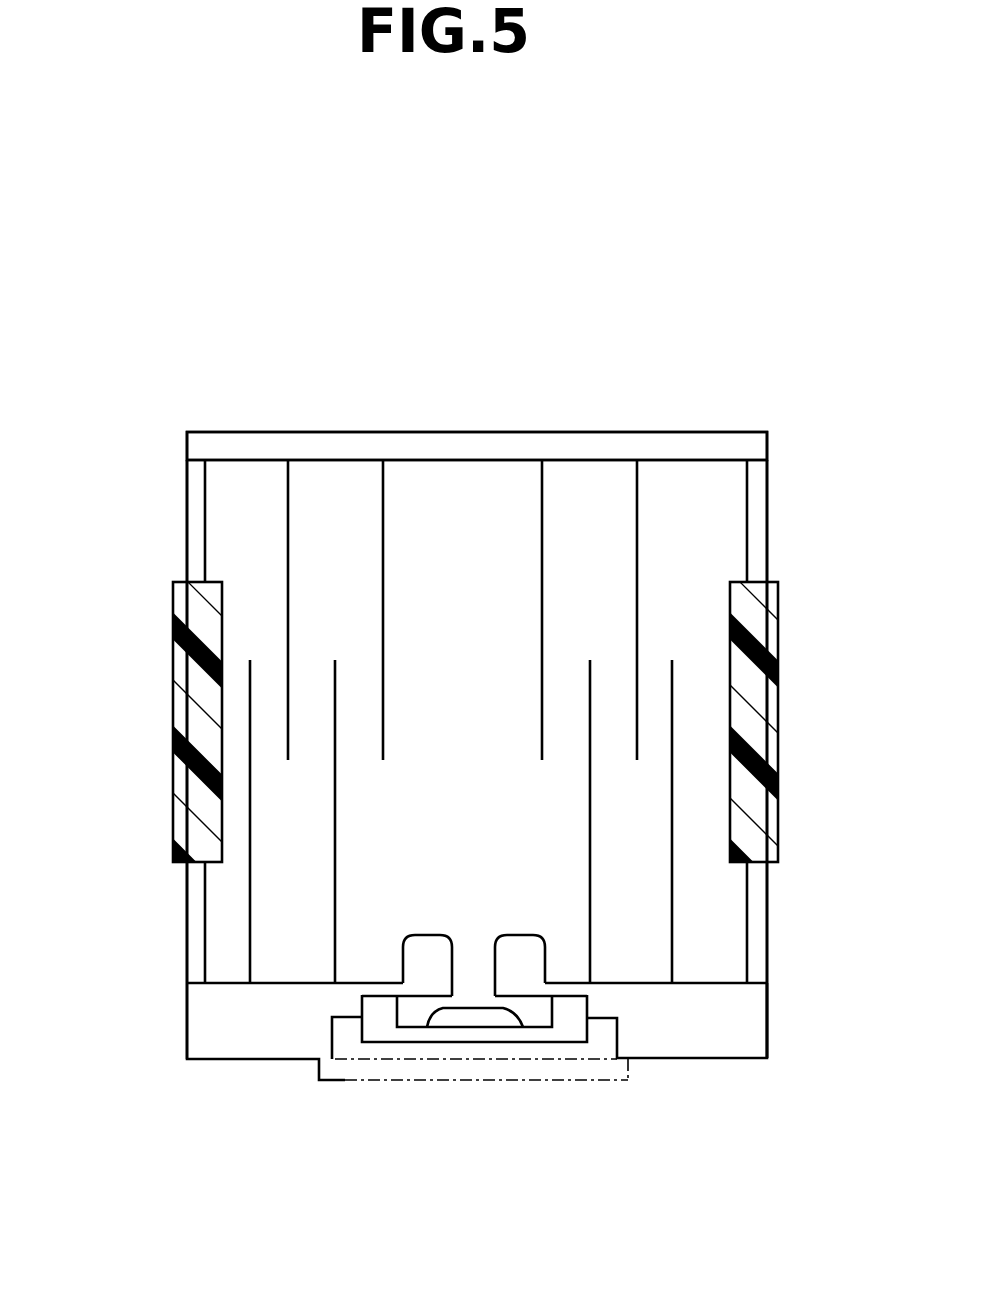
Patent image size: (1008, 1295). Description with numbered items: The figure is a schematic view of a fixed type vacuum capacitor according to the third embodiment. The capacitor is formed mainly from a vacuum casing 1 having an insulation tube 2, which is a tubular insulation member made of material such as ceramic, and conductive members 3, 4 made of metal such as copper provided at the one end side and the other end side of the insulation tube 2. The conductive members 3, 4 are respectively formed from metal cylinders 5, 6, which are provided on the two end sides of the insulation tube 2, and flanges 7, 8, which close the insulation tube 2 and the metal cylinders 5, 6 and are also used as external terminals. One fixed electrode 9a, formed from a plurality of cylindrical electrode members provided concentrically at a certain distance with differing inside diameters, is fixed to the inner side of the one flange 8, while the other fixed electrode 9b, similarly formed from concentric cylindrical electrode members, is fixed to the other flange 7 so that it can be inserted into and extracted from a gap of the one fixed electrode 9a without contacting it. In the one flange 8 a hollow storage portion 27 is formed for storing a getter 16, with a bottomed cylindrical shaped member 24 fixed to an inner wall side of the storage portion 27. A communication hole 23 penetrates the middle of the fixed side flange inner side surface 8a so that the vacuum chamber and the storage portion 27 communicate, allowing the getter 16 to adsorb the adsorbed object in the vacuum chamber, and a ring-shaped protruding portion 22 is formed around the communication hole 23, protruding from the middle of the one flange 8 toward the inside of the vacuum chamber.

The vacuum casing 1 is at (155, 558).
The insulation tube 2 is at (173, 702).
The conductive member 3 is at (205, 1130).
The conductive member 4 is at (870, 332).
The metal cylinder 5 is at (187, 958).
The metal cylinder 6 is at (757, 505).
The flange 7 is at (692, 432).
The flange 8 is at (233, 1042).
The fixed side flange inner side surface 8a is at (392, 983).
The fixed electrode 9a is at (248, 908).
The fixed electrode 9b is at (288, 505).
The getter 16 is at (448, 1017).
The ring-shaped protruding portion 22 is at (518, 935).
The communication hole 23 is at (452, 962).
The bottomed cylindrical shaped member 24 is at (485, 1033).
The storage portion 27 is at (343, 1033).